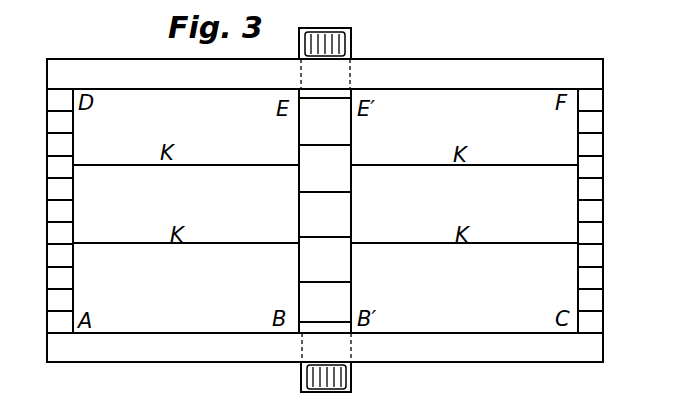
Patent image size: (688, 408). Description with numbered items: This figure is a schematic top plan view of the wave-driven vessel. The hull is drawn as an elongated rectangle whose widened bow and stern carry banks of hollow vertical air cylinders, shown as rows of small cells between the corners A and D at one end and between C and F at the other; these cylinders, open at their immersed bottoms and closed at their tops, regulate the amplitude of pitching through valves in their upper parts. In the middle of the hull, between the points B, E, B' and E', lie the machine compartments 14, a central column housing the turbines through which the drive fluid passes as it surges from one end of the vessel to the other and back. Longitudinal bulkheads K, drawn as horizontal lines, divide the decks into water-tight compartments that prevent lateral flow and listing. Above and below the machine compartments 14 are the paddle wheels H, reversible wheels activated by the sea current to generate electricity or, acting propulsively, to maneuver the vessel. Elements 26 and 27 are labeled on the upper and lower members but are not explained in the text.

The machine compartments 14 is at (350, 138).
The upper cross member 26 is at (179, 91).
The lower cross member 27 is at (484, 317).
The paddle wheels H is at (351, 44).